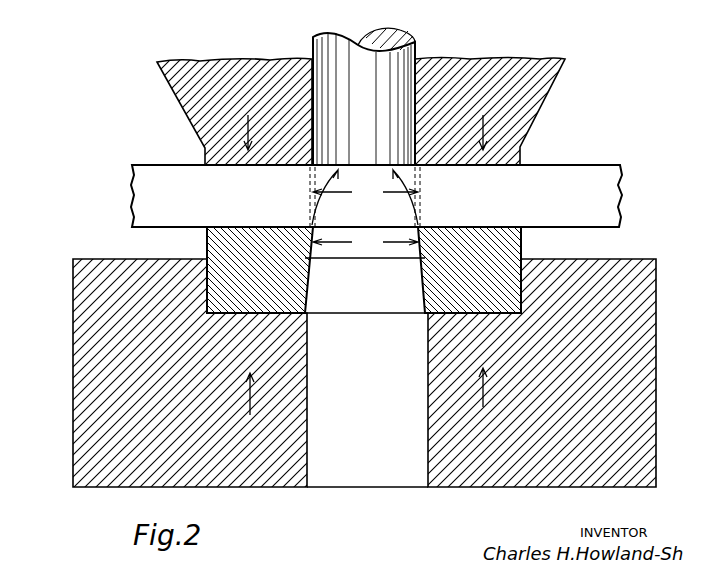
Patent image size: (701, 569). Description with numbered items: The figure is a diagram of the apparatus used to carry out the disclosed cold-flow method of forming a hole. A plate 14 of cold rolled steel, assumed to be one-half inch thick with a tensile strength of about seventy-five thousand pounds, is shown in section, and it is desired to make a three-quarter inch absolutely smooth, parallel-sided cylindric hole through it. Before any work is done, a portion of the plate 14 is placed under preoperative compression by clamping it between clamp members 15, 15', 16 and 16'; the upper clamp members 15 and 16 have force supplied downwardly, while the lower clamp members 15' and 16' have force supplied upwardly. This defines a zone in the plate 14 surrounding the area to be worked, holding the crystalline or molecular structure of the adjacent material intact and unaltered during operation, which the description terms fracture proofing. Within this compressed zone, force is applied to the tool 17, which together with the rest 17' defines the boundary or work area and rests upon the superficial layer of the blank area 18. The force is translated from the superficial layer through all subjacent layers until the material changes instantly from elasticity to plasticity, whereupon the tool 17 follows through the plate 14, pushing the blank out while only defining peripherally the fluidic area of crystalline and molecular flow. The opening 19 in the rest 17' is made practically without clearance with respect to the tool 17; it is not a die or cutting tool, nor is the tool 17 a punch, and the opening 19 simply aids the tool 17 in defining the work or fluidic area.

The plate 14 is at (193, 172).
The clamp member 15 is at (223, 111).
The clamp member 16 is at (501, 112).
The tool 17 is at (378, 124).
The rest 17' is at (389, 270).
The clamp member 15' is at (165, 373).
The clamp member 16' is at (563, 373).
The blank area 18 is at (365, 197).
The opening 19 is at (365, 243).